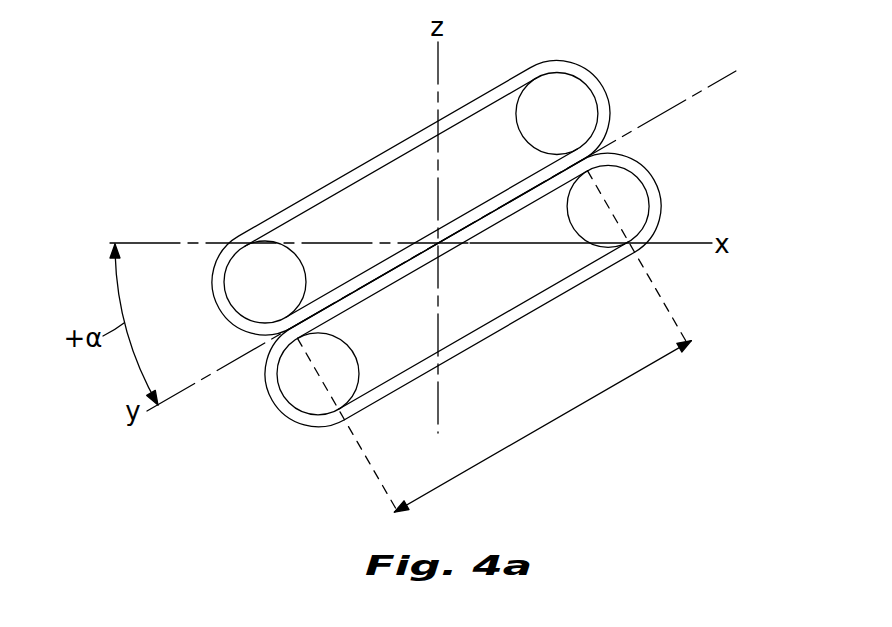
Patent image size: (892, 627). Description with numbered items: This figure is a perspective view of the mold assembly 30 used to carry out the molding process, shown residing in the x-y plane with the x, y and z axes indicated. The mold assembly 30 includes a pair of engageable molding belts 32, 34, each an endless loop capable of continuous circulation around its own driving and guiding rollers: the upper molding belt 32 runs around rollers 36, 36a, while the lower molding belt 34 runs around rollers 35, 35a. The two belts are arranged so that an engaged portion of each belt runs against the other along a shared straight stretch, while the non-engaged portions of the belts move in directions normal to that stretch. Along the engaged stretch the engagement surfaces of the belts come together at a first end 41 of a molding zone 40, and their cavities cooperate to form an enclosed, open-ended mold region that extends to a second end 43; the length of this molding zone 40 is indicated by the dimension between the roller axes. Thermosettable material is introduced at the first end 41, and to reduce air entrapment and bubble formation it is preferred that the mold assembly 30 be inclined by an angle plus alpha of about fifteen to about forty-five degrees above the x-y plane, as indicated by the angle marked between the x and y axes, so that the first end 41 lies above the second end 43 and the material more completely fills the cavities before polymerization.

The mold assembly 30 is at (610, 62).
The molding belt 32 is at (359, 169).
The molding belt 34 is at (497, 331).
The driving and guiding roller 35 is at (577, 231).
The driving and guiding roller 35a is at (310, 405).
The driving and guiding roller 36 is at (527, 141).
The driving and guiding roller 36a is at (236, 290).
The molding zone 40 is at (582, 406).
The first end of molding zone 41 is at (590, 160).
The second end of closed mold region 43 is at (287, 333).